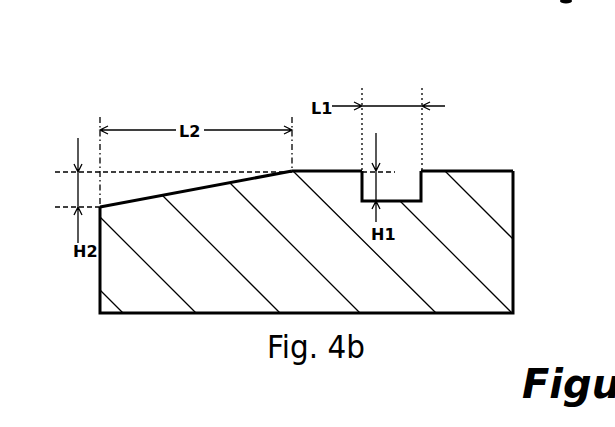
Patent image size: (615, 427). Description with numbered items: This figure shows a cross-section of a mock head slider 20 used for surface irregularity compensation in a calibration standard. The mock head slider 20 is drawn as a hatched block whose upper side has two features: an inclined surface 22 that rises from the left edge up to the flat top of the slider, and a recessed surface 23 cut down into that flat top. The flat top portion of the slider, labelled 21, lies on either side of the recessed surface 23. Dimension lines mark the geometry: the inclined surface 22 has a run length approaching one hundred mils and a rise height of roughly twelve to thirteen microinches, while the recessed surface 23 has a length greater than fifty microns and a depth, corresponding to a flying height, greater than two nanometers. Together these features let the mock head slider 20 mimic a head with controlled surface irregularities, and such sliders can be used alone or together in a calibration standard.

The mock head slider 20 is at (433, 267).
The upper surface 21 is at (327, 168).
The inclined surface 22 is at (147, 197).
The recessed surface 23 is at (385, 201).